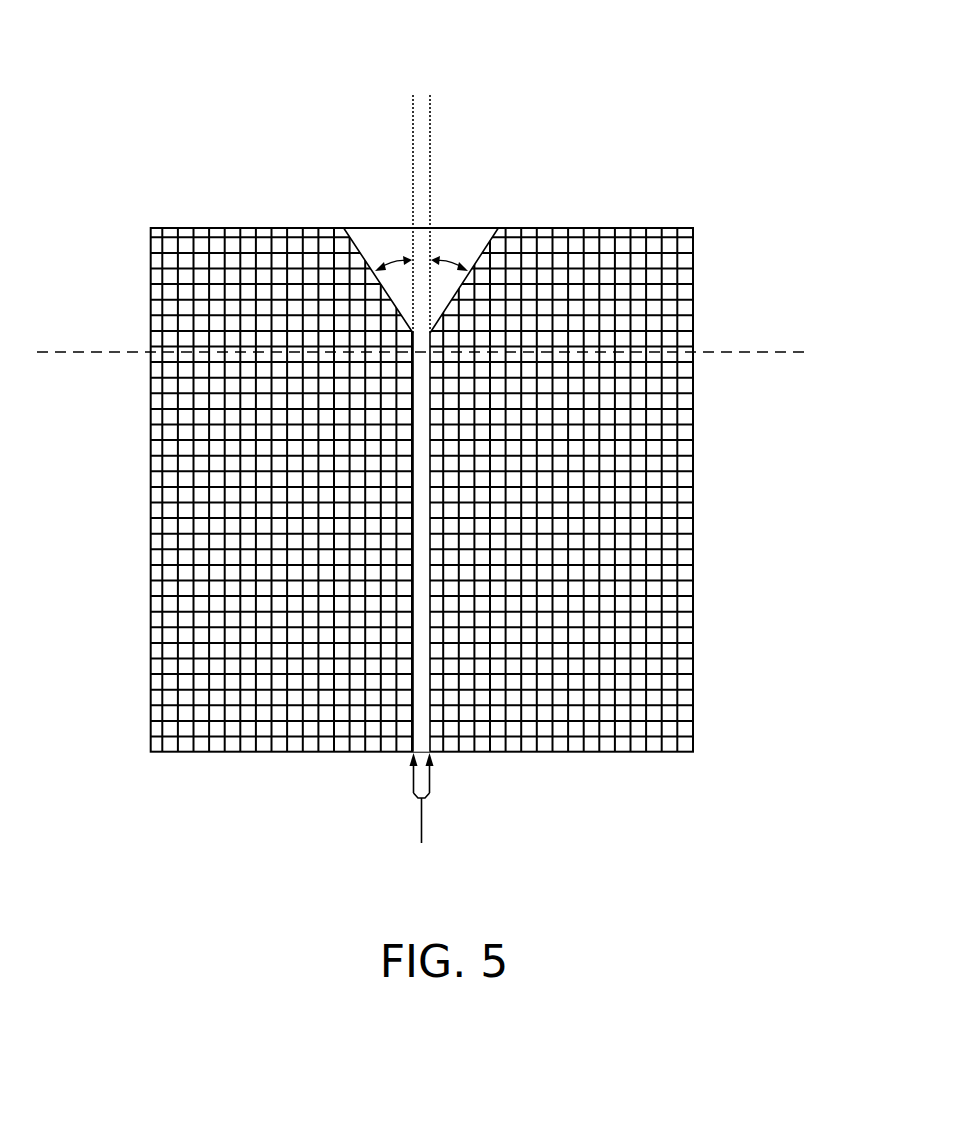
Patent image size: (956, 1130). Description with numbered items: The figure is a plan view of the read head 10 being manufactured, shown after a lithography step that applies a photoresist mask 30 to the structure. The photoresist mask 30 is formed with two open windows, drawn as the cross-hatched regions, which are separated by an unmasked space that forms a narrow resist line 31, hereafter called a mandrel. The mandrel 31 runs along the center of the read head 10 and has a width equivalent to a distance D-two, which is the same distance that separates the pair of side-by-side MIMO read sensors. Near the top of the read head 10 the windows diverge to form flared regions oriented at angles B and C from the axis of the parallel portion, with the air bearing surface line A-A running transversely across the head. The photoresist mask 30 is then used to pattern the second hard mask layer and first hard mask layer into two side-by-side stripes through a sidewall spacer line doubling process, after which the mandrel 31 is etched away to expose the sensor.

The read head 10 is at (434, 450).
The photoresist mask 30 is at (305, 478).
The narrow resist line 31 is at (422, 737).